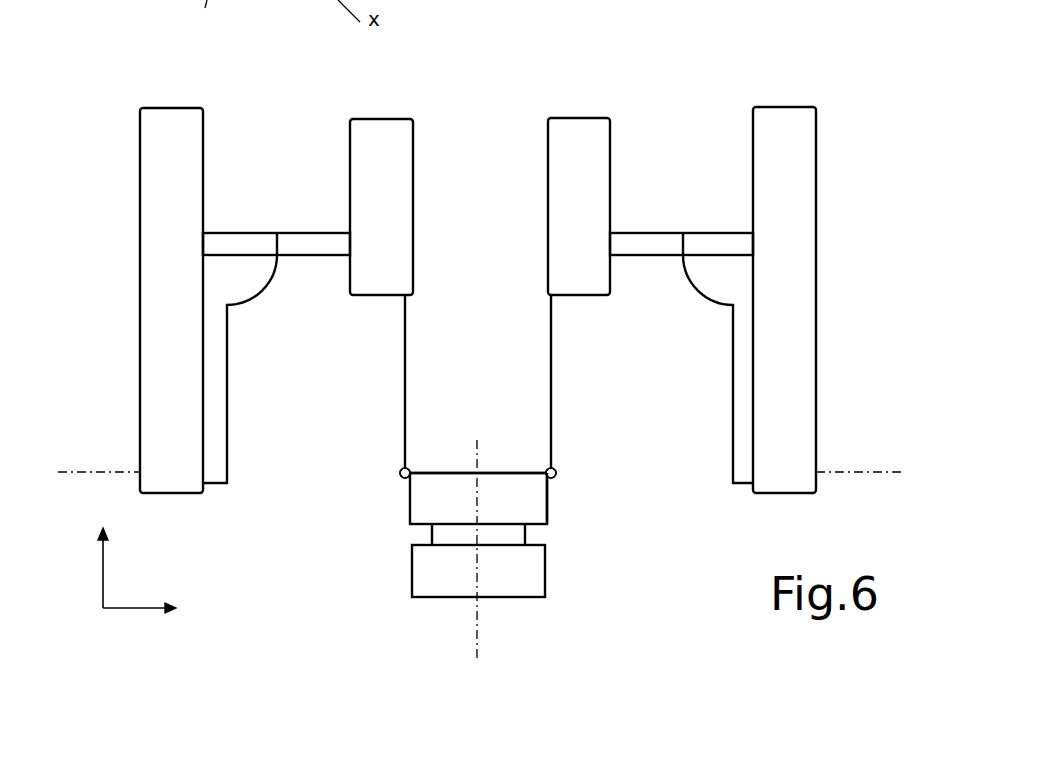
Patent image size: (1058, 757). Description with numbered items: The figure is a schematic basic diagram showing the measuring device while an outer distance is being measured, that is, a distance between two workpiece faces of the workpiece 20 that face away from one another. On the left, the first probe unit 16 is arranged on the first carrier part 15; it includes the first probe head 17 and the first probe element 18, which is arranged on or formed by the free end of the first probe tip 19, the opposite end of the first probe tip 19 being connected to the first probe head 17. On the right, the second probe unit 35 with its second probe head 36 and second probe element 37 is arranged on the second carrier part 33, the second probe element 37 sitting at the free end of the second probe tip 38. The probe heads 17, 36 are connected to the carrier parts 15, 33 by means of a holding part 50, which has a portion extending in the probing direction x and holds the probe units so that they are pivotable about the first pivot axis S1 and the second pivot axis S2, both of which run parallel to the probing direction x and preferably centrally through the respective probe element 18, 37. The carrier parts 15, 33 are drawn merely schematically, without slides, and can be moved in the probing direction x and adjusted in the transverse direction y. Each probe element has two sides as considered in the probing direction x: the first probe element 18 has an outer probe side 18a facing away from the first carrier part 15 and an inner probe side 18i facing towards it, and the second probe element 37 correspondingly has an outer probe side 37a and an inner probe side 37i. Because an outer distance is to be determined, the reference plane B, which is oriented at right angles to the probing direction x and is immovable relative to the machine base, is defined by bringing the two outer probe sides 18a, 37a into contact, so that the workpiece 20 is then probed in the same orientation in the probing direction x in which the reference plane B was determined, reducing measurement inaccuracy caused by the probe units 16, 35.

The first carrier part 15 is at (158, 137).
The first probe unit 16 is at (293, 166).
The first probe head 17 is at (393, 183).
The first probe element 18 is at (402, 479).
The outer probe side 18a is at (407, 468).
The inner probe side 18i is at (400, 473).
The first probe tip 19 is at (405, 352).
The workpiece 20 is at (510, 590).
The second carrier part 33 is at (797, 148).
The second probe unit 35 is at (680, 108).
The second probe head 36 is at (565, 162).
The second probe element 37 is at (554, 478).
The outer probe side 37a is at (549, 468).
The inner probe side 37i is at (556, 473).
The second probe tip 38 is at (553, 343).
The holding part 50 is at (245, 250).
The first pivot axis S1 is at (72, 470).
The second pivot axis S2 is at (868, 470).
The reference plane B is at (475, 638).
The probing direction x is at (134, 606).
The transverse direction y is at (100, 563).